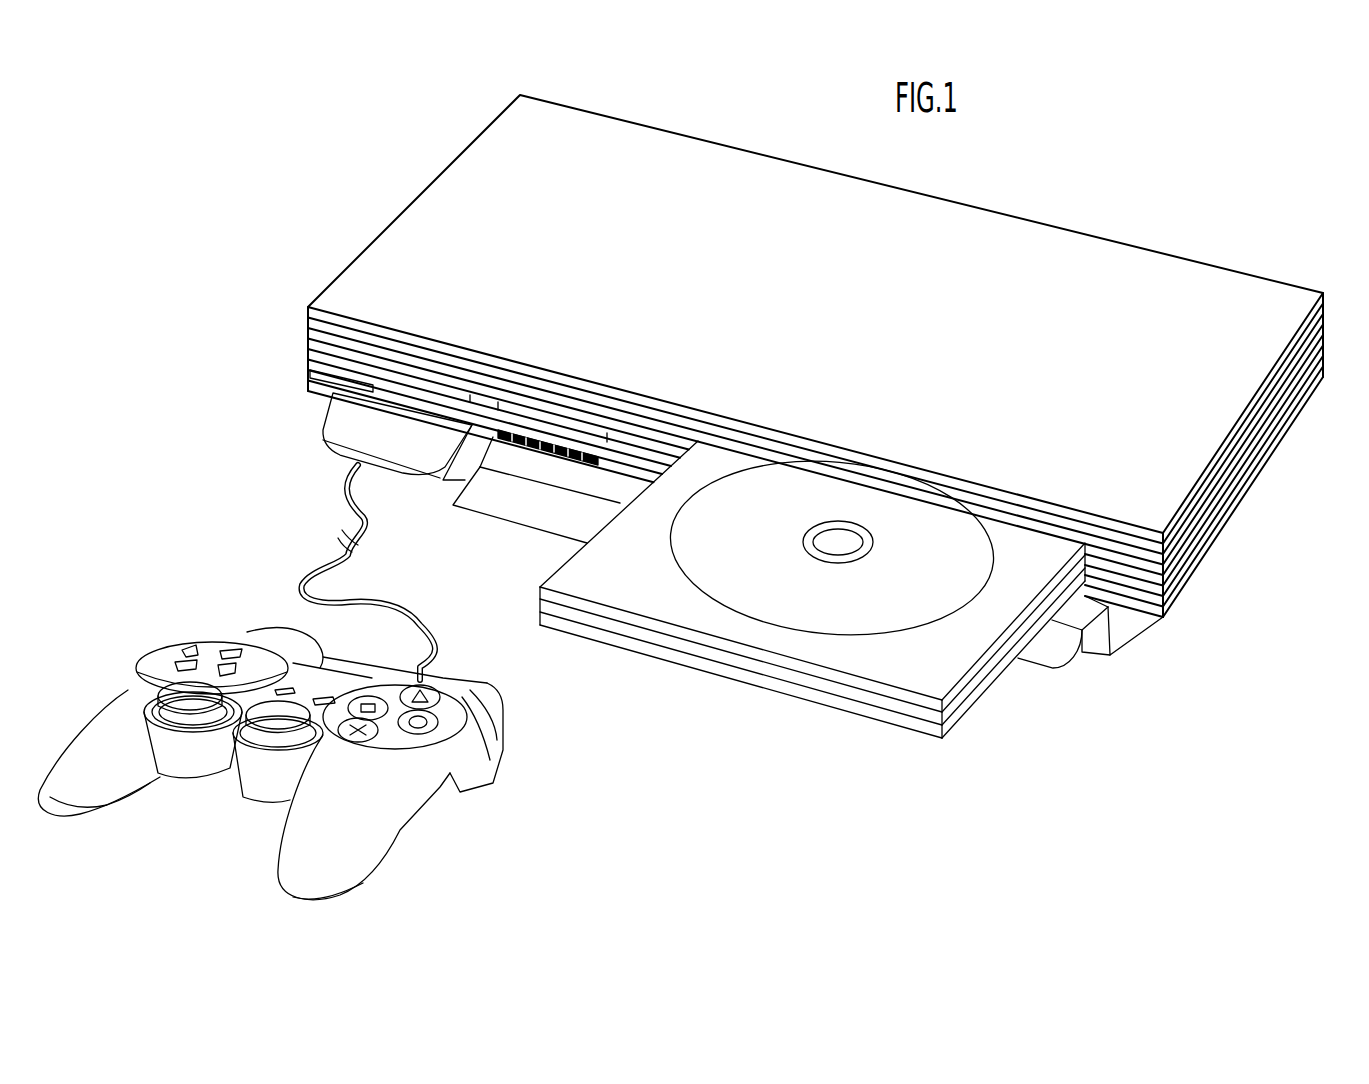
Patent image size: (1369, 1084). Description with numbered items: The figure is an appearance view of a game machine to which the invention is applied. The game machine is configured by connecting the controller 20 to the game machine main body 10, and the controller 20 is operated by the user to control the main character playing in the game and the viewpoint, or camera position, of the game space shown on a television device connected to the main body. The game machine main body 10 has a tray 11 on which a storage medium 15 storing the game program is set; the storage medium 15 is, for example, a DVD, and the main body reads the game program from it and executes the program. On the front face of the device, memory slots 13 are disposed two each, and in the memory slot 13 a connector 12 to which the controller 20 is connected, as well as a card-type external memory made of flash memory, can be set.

The game machine main body 10 is at (1080, 208).
The tray 11 is at (930, 662).
The connector 12 is at (410, 398).
The memory slot 13 is at (373, 373).
The storage medium 15 is at (772, 600).
The controller 20 is at (228, 832).